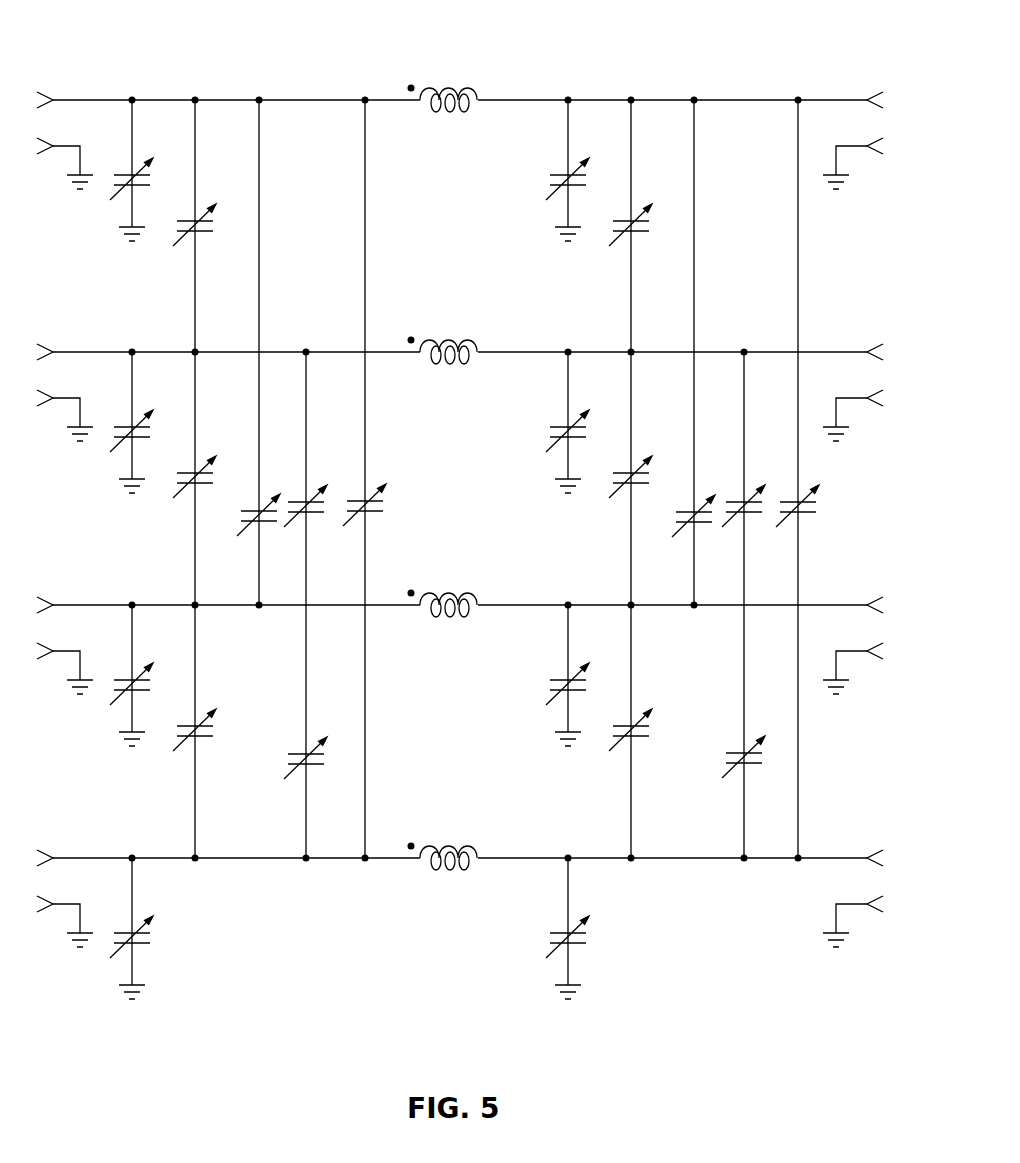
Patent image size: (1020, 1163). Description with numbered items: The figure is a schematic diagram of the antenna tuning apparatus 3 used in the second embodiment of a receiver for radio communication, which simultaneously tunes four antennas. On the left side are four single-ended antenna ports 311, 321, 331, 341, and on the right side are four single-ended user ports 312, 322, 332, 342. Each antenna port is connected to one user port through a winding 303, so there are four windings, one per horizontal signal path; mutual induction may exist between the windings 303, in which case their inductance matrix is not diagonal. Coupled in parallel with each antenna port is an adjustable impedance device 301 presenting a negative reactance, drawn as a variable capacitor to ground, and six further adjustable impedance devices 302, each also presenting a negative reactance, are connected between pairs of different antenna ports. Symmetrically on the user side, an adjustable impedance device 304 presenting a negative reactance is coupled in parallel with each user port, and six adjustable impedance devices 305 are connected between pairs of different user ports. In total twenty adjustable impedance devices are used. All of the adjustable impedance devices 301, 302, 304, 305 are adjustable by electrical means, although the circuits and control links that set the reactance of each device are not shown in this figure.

The antenna tuning apparatus 3 is at (773, 1020).
The adjustable impedance device 301 is at (119, 562).
The adjustable impedance device 302 is at (268, 479).
The winding 303 is at (443, 446).
The adjustable impedance device 304 is at (553, 562).
The adjustable impedance device 305 is at (702, 479).
The antenna port 311 is at (65, 110).
The user port 312 is at (853, 110).
The antenna port 321 is at (65, 363).
The user port 322 is at (853, 363).
The antenna port 331 is at (65, 615).
The user port 332 is at (853, 614).
The antenna port 341 is at (65, 868).
The user port 342 is at (853, 867).